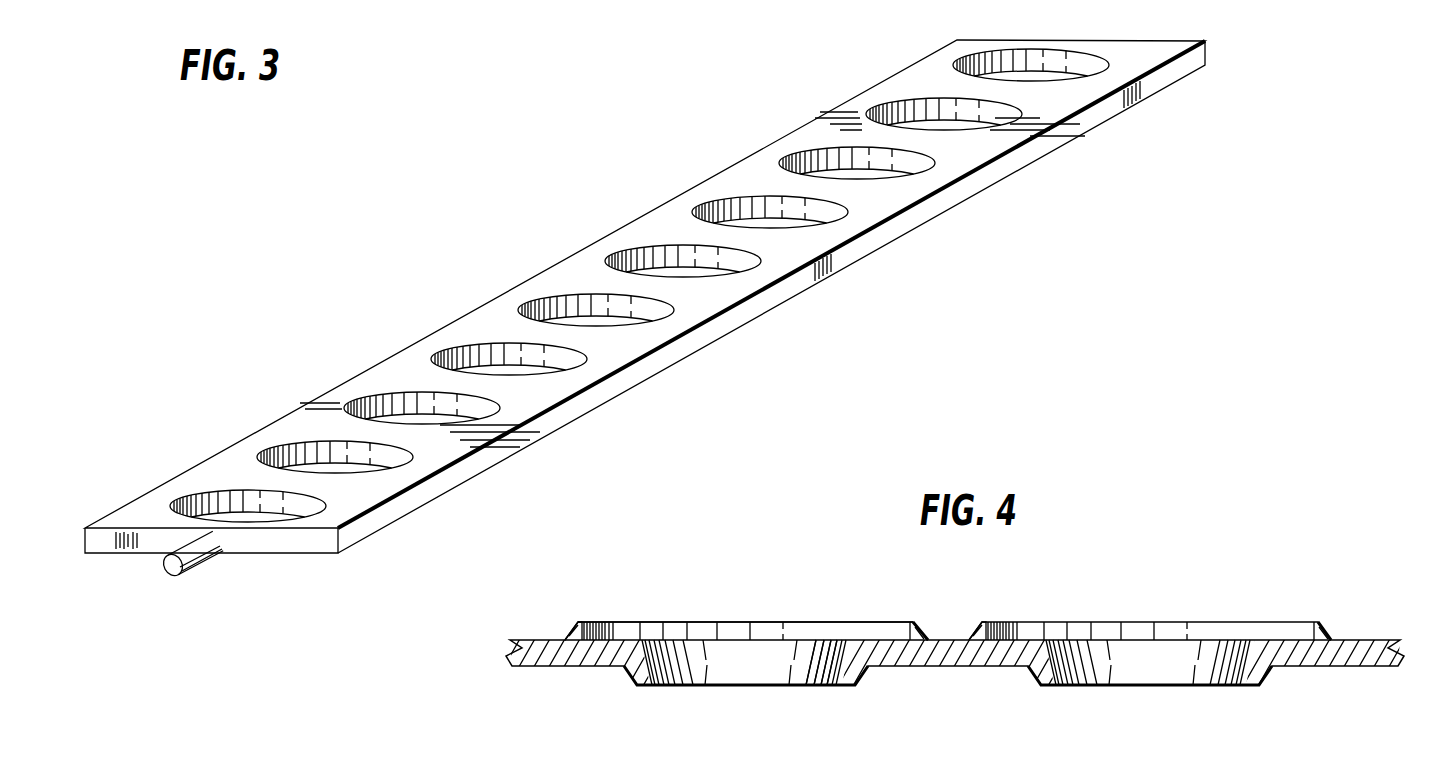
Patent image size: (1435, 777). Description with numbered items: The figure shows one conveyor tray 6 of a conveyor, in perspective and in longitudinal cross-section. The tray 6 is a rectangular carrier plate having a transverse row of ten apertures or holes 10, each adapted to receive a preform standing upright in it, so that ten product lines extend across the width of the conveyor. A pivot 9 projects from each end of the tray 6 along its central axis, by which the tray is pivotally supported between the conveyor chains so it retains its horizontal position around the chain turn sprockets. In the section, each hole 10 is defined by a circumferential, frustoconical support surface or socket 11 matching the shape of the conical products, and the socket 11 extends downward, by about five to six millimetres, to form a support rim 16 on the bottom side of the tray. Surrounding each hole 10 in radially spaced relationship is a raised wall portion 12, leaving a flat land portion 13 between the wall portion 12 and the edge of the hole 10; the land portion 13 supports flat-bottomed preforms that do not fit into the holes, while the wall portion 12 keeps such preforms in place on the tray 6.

In FIG. 3, the carrier tray 6 is at (632, 222).
In FIG. 4, the carrier tray 6 is at (537, 640).
In FIG. 3, the pivot 9 is at (212, 548).
In FIG. 3, the hole 10 is at (842, 177).
In FIG. 4, the hole 10 is at (713, 660).
In FIG. 4, the frustoconical support surface 11 is at (847, 662).
In FIG. 4, the raised wall portion 12 is at (571, 630).
In FIG. 4, the land portion 13 is at (883, 640).
In FIG. 4, the support rim 16 is at (1033, 677).